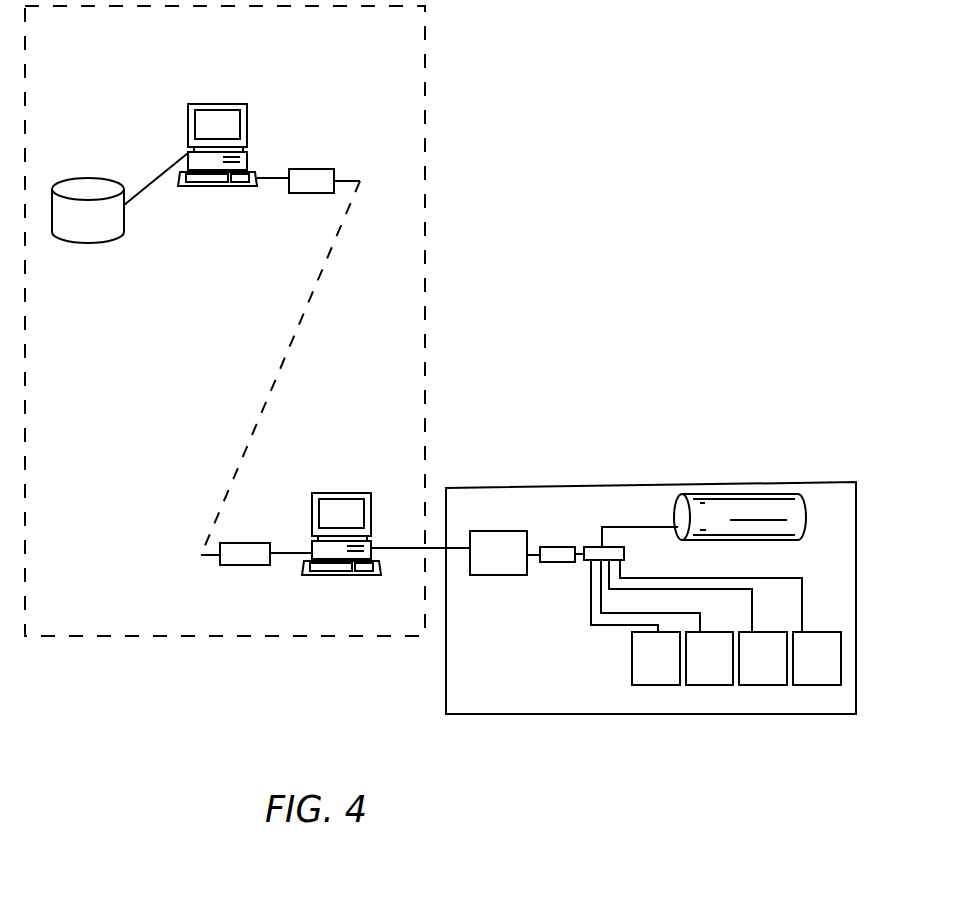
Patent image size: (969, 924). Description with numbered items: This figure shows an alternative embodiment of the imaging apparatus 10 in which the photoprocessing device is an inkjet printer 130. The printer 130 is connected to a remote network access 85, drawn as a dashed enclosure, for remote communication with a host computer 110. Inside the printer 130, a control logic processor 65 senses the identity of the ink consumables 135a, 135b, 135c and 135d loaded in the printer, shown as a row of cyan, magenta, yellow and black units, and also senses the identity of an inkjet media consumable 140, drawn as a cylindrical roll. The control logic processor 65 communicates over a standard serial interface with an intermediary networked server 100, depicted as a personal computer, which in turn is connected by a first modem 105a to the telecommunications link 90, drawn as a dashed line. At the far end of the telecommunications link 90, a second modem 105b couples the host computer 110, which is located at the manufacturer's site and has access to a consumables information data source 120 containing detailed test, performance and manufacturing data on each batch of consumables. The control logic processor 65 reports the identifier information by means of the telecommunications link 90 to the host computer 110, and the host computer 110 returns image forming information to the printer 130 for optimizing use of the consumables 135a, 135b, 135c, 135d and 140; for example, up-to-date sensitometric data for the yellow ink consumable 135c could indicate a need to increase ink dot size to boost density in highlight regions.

The imaging apparatus 10 is at (630, 130).
The control logic processor 65 is at (500, 531).
The remote network access 85 is at (445, 92).
The telecommunications link 90 is at (342, 284).
The networked server 100 is at (350, 493).
The first modem 105a is at (245, 565).
The second modem 105b is at (312, 170).
The host computer 110 is at (218, 104).
The consumables information data source 120 is at (88, 182).
The inkjet printer 130 is at (655, 483).
The ink consumable 135a is at (644, 685).
The ink consumable 135b is at (708, 685).
The ink consumable 135c is at (767, 685).
The ink consumable 135d is at (830, 685).
The inkjet media consumable 140 is at (756, 503).